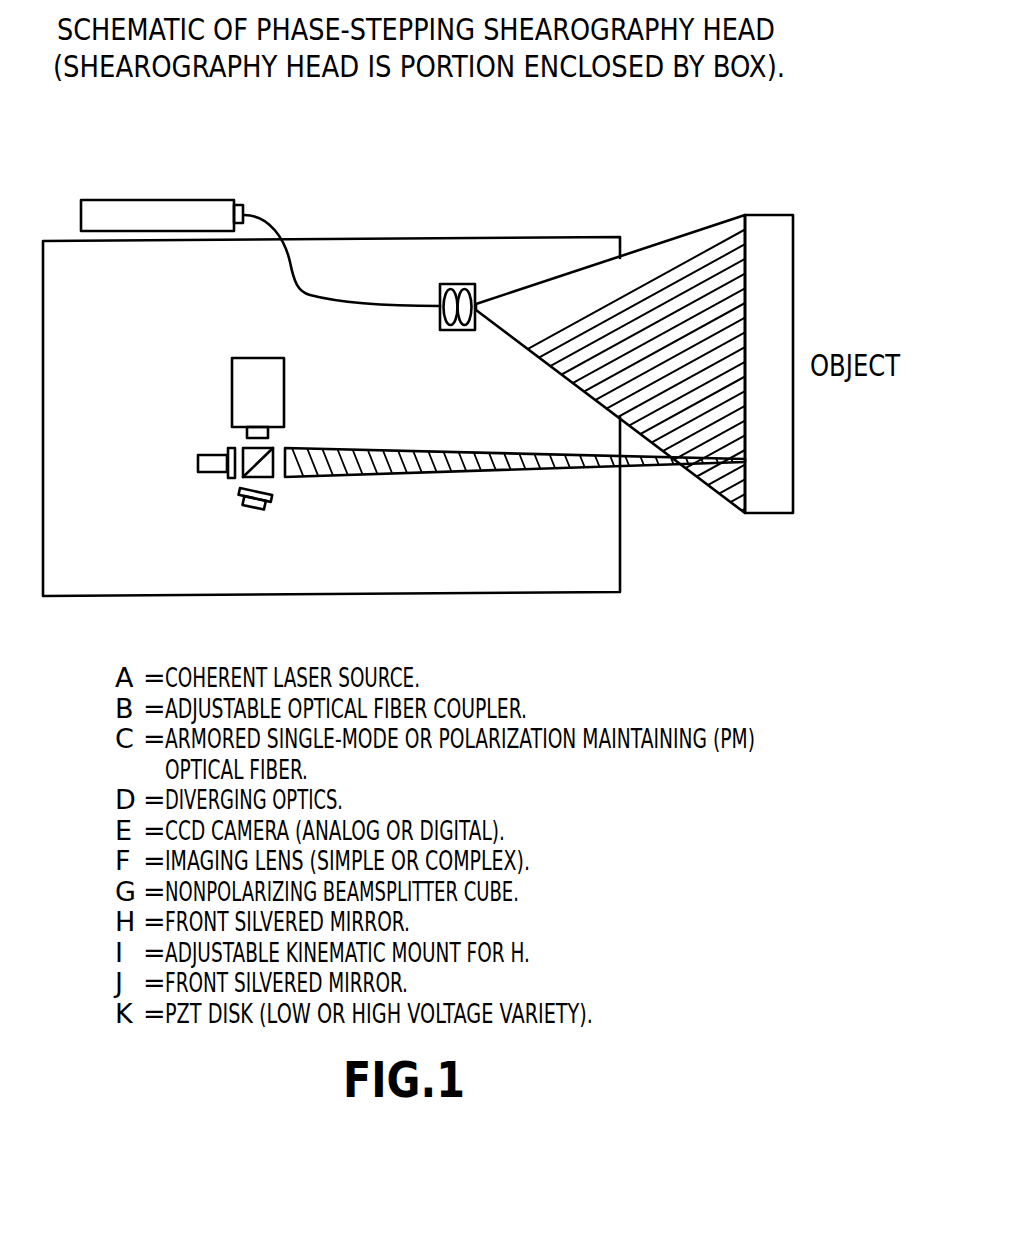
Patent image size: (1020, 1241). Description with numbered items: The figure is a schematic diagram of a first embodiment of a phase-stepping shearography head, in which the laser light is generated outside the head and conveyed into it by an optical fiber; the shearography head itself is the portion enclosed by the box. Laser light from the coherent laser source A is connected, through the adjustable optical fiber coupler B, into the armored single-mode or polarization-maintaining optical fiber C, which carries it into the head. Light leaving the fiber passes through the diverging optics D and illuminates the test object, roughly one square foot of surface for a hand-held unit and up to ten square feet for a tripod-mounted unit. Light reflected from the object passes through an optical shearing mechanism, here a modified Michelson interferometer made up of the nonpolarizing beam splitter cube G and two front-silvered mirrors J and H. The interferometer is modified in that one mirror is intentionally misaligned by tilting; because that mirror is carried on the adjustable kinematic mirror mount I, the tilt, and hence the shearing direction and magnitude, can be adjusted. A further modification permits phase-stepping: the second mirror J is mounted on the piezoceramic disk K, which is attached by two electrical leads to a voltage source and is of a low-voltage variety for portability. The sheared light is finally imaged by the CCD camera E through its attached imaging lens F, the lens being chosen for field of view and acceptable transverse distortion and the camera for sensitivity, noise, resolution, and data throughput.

The coherent laser source A is at (137, 200).
The adjustable optical fiber coupler B is at (243, 208).
The armored single-mode or polarization-maintaining (PM) optical fiber C is at (310, 290).
The diverging optics D is at (462, 284).
The CCD camera E is at (232, 392).
The imaging lens F is at (247, 437).
The nonpolarizing beam splitter cube G is at (276, 481).
The front-silvered mirror H is at (270, 503).
The adjustable kinematic mirror mount I is at (247, 508).
The front-silvered mirror J is at (229, 479).
The piezoceramic (PZT) disk K is at (197, 461).